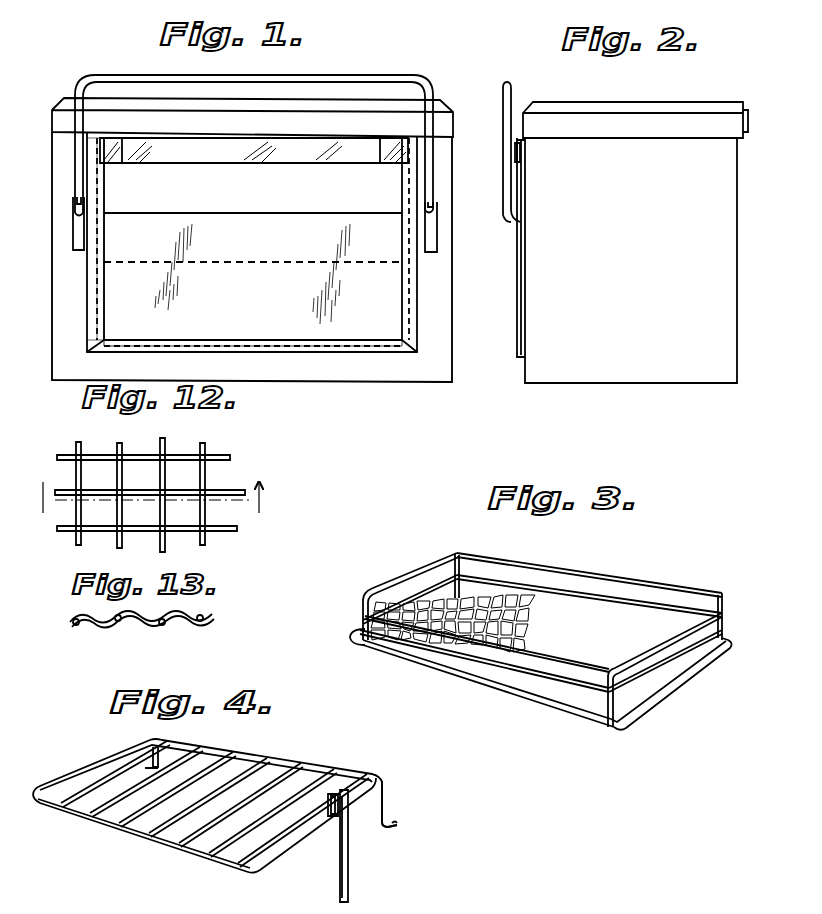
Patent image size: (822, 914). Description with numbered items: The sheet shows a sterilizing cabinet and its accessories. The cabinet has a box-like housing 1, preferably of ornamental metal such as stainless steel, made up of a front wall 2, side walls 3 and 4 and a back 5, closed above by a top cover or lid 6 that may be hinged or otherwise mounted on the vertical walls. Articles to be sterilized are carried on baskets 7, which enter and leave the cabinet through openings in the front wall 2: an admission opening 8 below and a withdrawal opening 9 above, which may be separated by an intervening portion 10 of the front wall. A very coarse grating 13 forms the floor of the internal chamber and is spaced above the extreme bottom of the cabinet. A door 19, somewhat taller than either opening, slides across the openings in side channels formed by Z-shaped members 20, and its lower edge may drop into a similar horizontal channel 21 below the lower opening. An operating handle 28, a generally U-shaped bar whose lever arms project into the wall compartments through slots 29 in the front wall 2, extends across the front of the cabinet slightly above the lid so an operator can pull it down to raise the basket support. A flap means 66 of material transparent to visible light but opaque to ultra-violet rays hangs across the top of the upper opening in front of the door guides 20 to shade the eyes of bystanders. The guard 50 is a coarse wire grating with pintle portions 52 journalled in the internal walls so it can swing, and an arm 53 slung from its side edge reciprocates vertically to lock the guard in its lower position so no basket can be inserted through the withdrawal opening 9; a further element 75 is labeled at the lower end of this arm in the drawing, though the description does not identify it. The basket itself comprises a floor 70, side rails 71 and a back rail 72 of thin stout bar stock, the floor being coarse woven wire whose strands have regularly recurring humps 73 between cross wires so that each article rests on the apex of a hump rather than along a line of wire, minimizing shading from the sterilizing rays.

In FIG. 1, the box-like housing 1 is at (446, 312).
In FIG. 1, the front wall 2 is at (400, 378).
In FIG. 1, the side wall 3 is at (452, 258).
In FIG. 2, the side wall 3 is at (675, 372).
In FIG. 1, the side wall 4 is at (48, 278).
In FIG. 2, the back 5 is at (733, 268).
In FIG. 4, the back 5 is at (386, 802).
In FIG. 1, the top cover or lid 6 is at (442, 102).
In FIG. 2, the top cover or lid 6 is at (670, 105).
In FIG. 3, the basket 7 is at (635, 572).
In FIG. 1, the admission opening 8 is at (100, 316).
In FIG. 1, the withdrawal opening 9 is at (110, 188).
In FIG. 1, the intervening portion 10 is at (156, 224).
In FIG. 12, the coarse grating 13 is at (148, 508).
In FIG. 1, the door 19 is at (358, 224).
In FIG. 1, the Z-shaped member 20 is at (410, 324).
In FIG. 2, the Z-shaped member 20 is at (522, 229).
In FIG. 1, the channel 21 is at (333, 354).
In FIG. 1, the operating handle 28 is at (415, 77).
In FIG. 2, the operating handle 28 is at (511, 98).
In FIG. 1, the slot 29 is at (76, 232).
In FIG. 2, the slot 29 is at (495, 164).
In FIG. 4, the guard 50 is at (135, 843).
In FIG. 4, the pintle portion 52 is at (400, 824).
In FIG. 4, the arm 53 is at (348, 870).
In FIG. 1, the flap means 66 is at (258, 175).
In FIG. 12, the floor 70 is at (236, 481).
In FIG. 3, the floor 70 is at (445, 640).
In FIG. 3, the side rail 71 is at (378, 588).
In FIG. 3, the back rail 72 is at (588, 572).
In FIG. 13, the hump 73 is at (192, 618).
In FIG. 4, the shelf support 75 is at (310, 906).